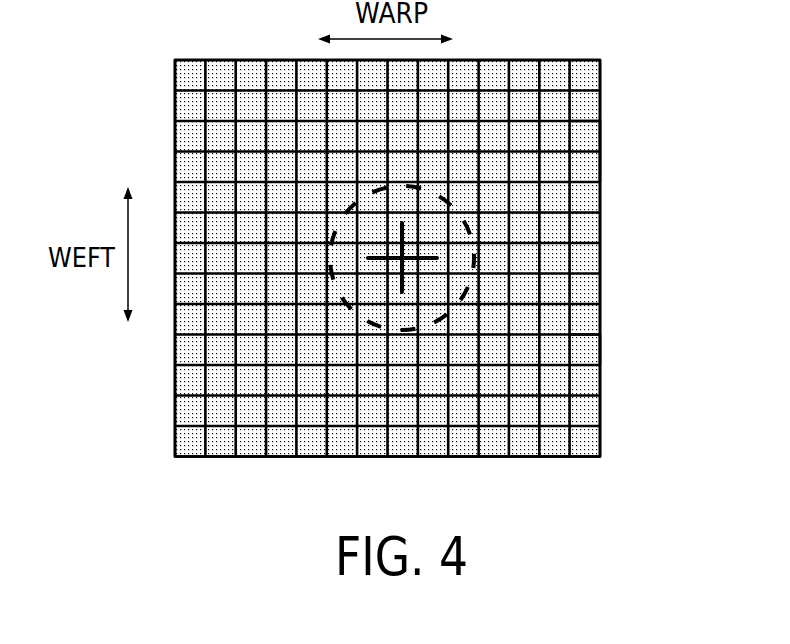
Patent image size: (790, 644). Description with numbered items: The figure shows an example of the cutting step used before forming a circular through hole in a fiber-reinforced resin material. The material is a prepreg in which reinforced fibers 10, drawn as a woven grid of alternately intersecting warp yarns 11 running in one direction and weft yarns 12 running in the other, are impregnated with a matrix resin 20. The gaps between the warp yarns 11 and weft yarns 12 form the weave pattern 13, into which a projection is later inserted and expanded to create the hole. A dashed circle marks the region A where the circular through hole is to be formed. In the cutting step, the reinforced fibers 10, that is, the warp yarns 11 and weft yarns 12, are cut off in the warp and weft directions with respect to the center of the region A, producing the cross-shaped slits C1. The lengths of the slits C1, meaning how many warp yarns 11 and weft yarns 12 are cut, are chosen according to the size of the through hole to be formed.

The reinforced fibers 10 is at (648, 390).
The warp yarns 11 is at (520, 462).
The weft yarns 12 is at (585, 390).
The weave pattern 13 is at (577, 139).
The matrix resin 20 is at (585, 348).
The region A is at (467, 217).
The cross-shaped slits C1 is at (405, 283).